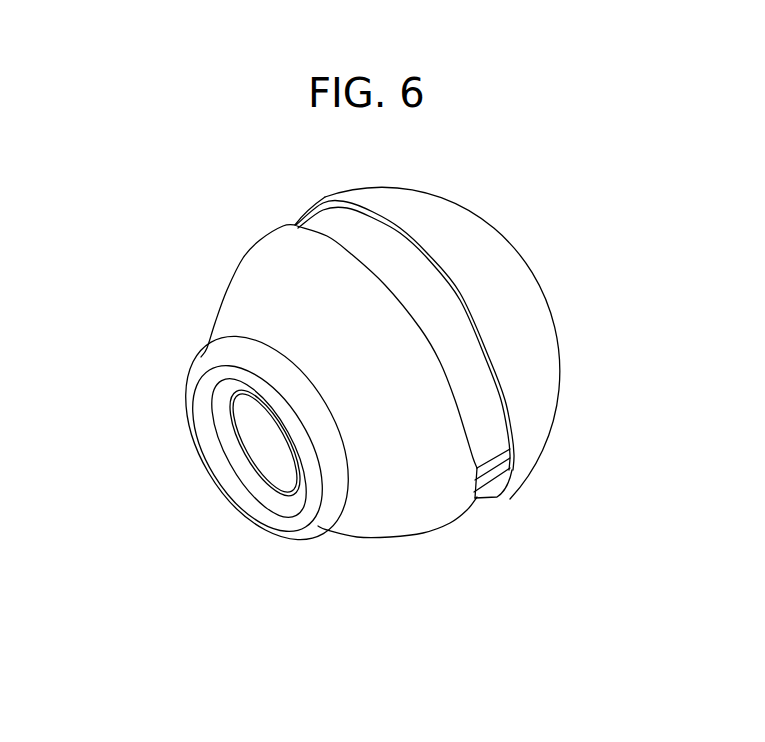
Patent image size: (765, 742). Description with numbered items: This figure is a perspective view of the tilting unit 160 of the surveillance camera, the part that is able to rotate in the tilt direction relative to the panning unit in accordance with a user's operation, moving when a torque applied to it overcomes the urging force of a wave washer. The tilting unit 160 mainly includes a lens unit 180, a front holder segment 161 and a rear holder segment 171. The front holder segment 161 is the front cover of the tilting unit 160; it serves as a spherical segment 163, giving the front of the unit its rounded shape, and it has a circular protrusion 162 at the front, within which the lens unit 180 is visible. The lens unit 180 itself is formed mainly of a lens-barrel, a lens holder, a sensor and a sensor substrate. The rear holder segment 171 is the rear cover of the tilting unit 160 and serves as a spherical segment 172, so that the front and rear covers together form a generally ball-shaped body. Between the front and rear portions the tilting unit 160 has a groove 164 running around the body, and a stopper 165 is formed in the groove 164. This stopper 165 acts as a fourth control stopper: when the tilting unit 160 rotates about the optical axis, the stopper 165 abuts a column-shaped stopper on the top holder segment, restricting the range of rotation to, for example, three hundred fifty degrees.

The tilting unit 160 is at (138, 220).
The front holder segment 161 is at (425, 485).
The circular protrusion 162 is at (203, 364).
The spherical segment 163 is at (332, 337).
The groove 164 is at (458, 352).
The stopper 165 is at (497, 477).
The rear holder segment 171 is at (535, 392).
The spherical segment 172 is at (463, 243).
The lens unit 180 is at (267, 462).